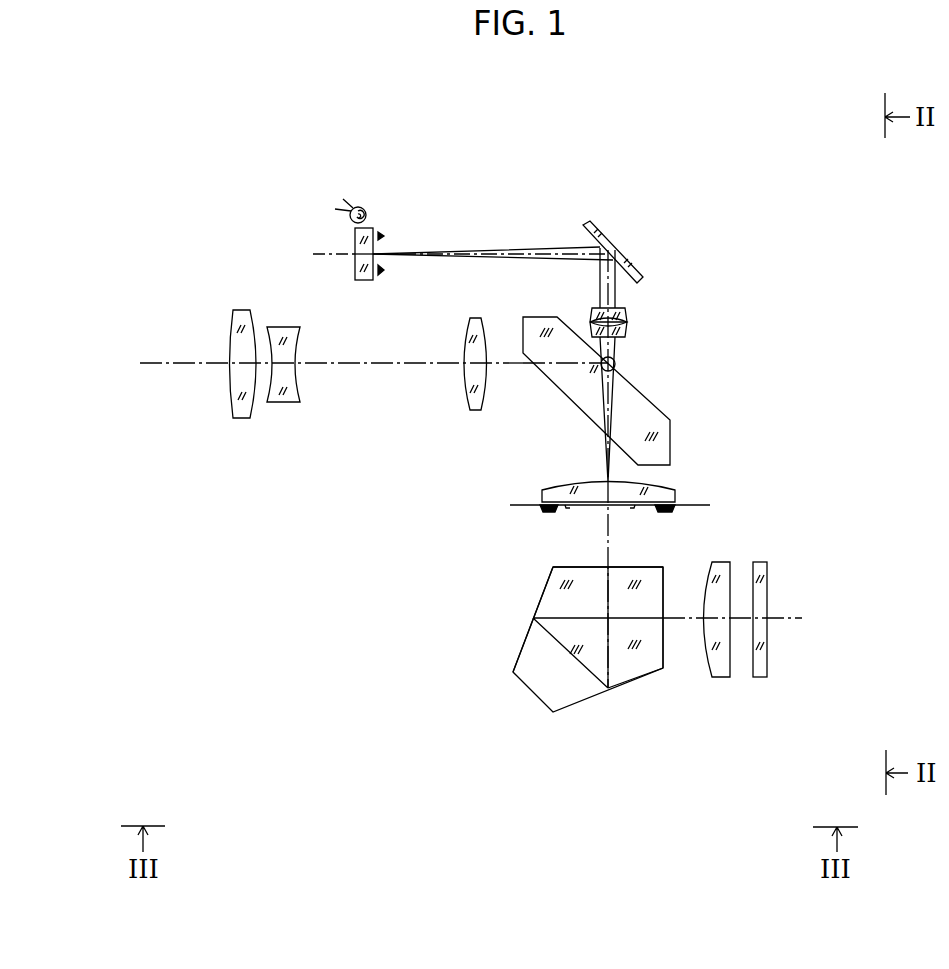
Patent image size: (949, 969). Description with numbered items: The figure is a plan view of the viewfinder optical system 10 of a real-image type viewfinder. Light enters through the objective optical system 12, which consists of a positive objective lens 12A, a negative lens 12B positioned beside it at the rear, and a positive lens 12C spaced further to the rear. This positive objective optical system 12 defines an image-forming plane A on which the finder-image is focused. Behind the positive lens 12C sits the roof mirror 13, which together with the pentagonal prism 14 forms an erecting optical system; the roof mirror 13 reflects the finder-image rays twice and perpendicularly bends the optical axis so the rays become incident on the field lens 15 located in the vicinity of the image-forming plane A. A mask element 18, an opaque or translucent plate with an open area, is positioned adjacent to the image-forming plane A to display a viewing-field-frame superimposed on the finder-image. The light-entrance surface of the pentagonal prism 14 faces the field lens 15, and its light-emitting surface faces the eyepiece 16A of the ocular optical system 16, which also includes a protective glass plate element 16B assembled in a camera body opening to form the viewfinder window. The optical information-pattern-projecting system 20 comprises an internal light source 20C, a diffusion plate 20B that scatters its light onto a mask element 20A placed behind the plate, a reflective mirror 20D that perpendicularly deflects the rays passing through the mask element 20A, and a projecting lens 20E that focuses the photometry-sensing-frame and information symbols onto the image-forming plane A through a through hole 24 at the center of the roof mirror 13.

The viewfinder optical system 10 is at (724, 348).
The objective optical system 12 is at (393, 397).
The positive objective lens 12A is at (243, 310).
The negative lens 12B is at (285, 327).
The positive lens 12C is at (475, 318).
The roof mirror 13 is at (670, 440).
The pentagonal prism 14 is at (582, 705).
The field lens 15 is at (677, 497).
The ocular optical system 16 is at (747, 683).
The eyepiece 16A is at (720, 562).
The protective glass plate element 16B is at (767, 648).
The mask element 18 is at (542, 508).
The optical information-pattern-projecting system 20 is at (558, 217).
The mask element 20A is at (387, 238).
The diffusion plate 20B is at (366, 280).
The internal light source 20C is at (383, 185).
The reflective mirror 20D is at (647, 245).
The projecting lens 20E is at (627, 322).
The through hole 24 is at (615, 367).
The image-forming plane A is at (523, 502).